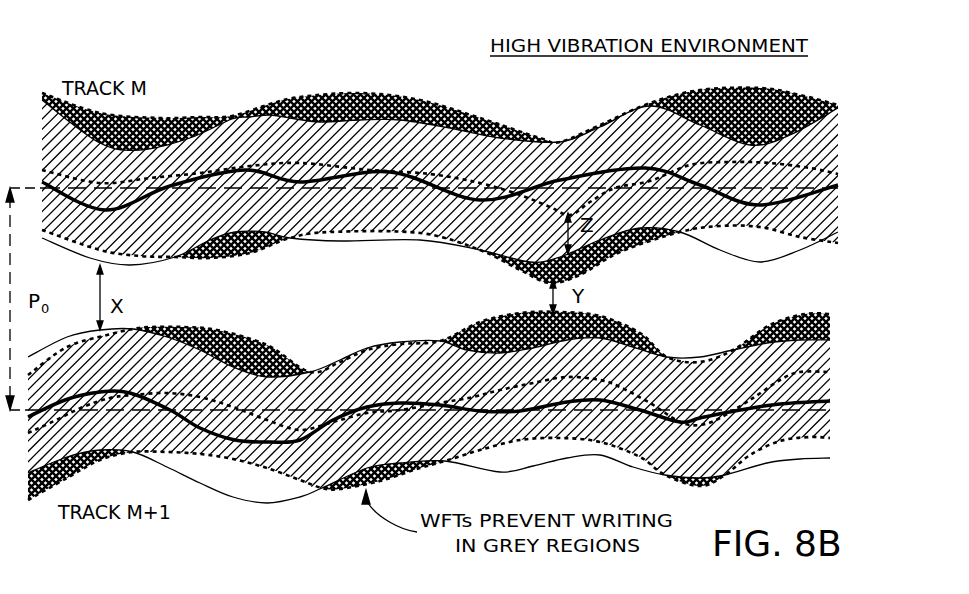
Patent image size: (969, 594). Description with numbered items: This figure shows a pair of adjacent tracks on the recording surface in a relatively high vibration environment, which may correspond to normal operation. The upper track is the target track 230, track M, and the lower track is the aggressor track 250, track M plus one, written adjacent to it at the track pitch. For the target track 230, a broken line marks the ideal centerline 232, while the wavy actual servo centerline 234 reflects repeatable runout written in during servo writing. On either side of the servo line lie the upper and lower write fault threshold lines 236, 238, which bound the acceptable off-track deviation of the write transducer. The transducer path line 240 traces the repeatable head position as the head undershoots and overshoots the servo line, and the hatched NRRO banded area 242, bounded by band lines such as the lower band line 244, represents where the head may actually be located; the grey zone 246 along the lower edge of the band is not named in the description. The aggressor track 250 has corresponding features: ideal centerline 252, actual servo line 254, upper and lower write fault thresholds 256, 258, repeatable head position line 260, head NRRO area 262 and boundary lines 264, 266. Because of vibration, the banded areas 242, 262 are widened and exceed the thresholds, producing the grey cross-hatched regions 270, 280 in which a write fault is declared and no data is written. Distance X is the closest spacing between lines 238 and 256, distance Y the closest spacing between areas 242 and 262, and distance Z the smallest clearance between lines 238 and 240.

The target track 230 is at (146, 37).
The ideal centerline 232 is at (513, 198).
The actual servo centerline 234 is at (232, 171).
The upper write fault threshold line 236 is at (290, 118).
The lower write fault threshold line 238 is at (305, 240).
The transducer path line 240 is at (350, 159).
The NRRO banded area 242 is at (453, 134).
The lower band line 244 is at (186, 116).
The grey region where writing is prevented 246 is at (628, 246).
The aggressor track 250 is at (162, 543).
The ideal centerline 252 is at (376, 467).
The actual servo line 254 is at (370, 404).
The upper write fault threshold 256 is at (383, 341).
The lower write fault threshold 258 is at (254, 505).
The repeatable head position line 260 is at (638, 392).
The head NRRO area 262 is at (470, 354).
The boundary line 264 is at (634, 331).
The boundary line 266 is at (528, 473).
The grey cross-hatched region 270 is at (486, 120).
The grey cross-hatched region 280 is at (198, 325).